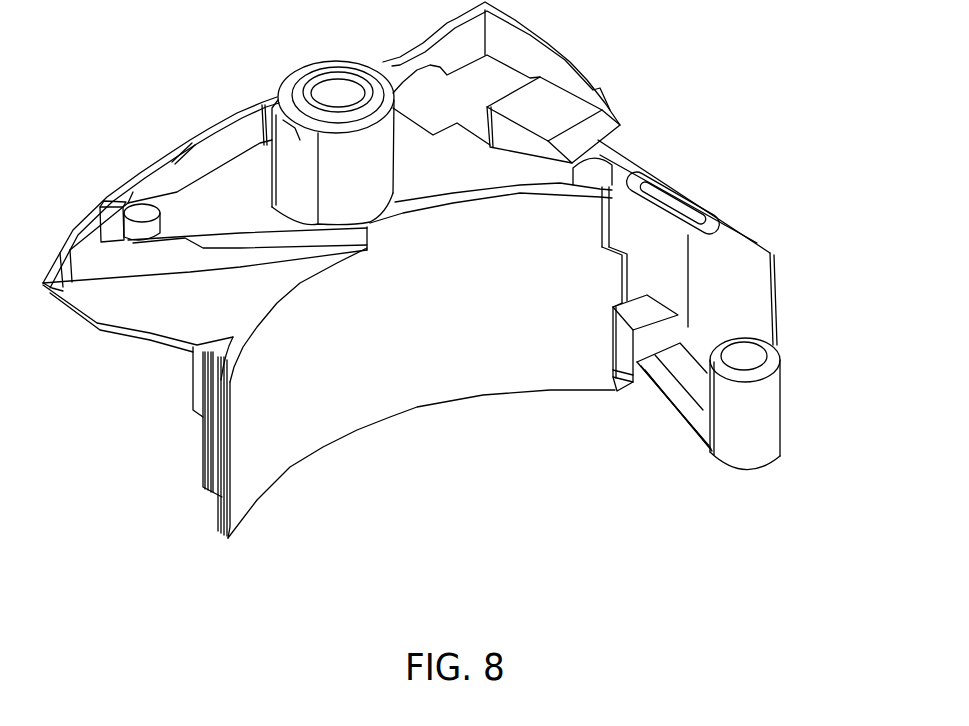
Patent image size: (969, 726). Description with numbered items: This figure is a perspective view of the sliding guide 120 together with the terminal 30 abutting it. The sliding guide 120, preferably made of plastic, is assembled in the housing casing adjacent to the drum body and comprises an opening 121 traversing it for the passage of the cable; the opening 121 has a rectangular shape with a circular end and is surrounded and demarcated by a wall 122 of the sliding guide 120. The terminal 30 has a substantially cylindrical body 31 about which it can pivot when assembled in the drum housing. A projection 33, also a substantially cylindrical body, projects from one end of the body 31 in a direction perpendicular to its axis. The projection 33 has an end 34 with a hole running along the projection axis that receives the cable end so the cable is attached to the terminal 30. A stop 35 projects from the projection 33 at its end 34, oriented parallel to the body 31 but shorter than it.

The sliding guide 120 is at (178, 101).
The opening 121 is at (640, 283).
The stop 35 is at (651, 335).
The end of the projection 34 is at (613, 368).
The wall 122 is at (614, 390).
The terminal 30 is at (657, 440).
The projection 33 is at (690, 425).
The body 31 is at (743, 418).